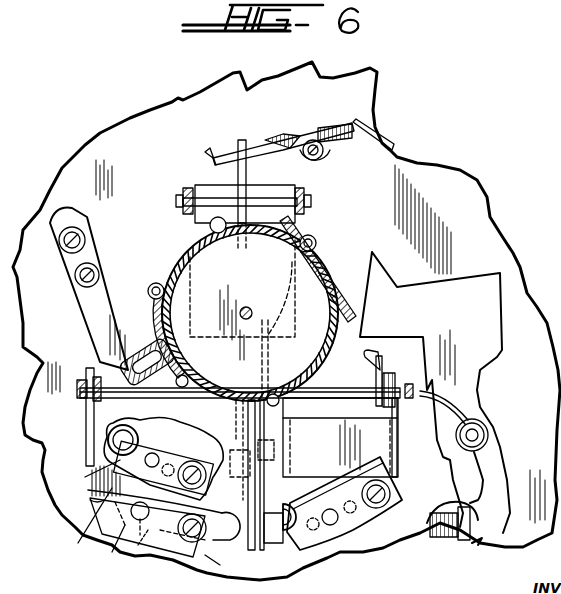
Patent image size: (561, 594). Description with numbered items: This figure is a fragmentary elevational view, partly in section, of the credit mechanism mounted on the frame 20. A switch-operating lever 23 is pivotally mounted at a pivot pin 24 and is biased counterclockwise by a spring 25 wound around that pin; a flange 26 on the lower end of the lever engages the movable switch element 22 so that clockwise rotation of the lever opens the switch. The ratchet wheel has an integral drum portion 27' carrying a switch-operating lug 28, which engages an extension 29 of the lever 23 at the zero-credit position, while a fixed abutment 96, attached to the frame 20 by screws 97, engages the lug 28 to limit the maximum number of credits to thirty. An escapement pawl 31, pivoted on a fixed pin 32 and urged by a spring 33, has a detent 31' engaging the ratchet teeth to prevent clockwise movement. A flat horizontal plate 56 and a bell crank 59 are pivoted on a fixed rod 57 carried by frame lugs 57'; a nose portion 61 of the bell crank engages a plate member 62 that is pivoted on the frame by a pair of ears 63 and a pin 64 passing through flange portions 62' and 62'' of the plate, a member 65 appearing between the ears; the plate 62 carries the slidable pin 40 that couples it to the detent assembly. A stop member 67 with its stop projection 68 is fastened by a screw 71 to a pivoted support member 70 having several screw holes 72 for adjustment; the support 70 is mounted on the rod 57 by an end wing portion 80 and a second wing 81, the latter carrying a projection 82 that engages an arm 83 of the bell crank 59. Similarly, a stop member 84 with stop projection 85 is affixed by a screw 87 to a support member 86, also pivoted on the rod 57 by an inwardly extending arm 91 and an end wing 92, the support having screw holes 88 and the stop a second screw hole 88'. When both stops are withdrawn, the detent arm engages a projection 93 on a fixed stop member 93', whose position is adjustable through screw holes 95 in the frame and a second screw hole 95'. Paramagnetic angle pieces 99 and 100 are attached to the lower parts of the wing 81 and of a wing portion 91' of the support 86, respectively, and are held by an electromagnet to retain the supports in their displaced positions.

The frame 20 is at (140, 158).
The switch element 22 is at (433, 513).
The switch-operating lever 23 is at (474, 311).
The pivot pin 24 is at (485, 432).
The spring 25 is at (485, 470).
The flange 26 is at (478, 548).
The drum portion 27' is at (319, 269).
The switch-operating lug 28 is at (140, 352).
The extension 29 is at (366, 354).
The pawl 31 is at (283, 132).
The detent 31' is at (219, 132).
The fixed pin 32 is at (314, 145).
The spring 33 is at (284, 136).
The slidable pin 40 is at (246, 307).
The flat horizontal plate 56 is at (376, 375).
The fixed rod 57 is at (240, 401).
The frame lugs 57' is at (241, 373).
The bell crank 59 is at (292, 350).
The nose portion 61 is at (280, 298).
The plate member 62 is at (250, 315).
The flange portion 62' is at (191, 243).
The flange portion 62'' is at (287, 238).
The ears 63 is at (185, 190).
The pin 64 is at (208, 200).
The center post 65 is at (247, 174).
The stop member 67 is at (332, 526).
The stop projection 68 is at (296, 536).
The support member 70 is at (328, 460).
The screw 71 is at (372, 506).
The screw holes 72 is at (316, 517).
The end wing portion 80 is at (386, 414).
The wing 81 is at (292, 420).
The projection 82 is at (250, 450).
The arm 83 is at (278, 450).
The stop member 84 is at (140, 553).
The stop projection 85 is at (210, 560).
The support member 86 is at (82, 520).
The screw 87 is at (185, 550).
The screw holes 88 is at (107, 546).
The second screw hole 88' is at (136, 546).
The inwardly extending arm 91 is at (156, 514).
The wing portion 91' is at (230, 513).
The end wing 92 is at (86, 404).
The projection 93 is at (91, 476).
The fixed stop member 93' is at (85, 506).
The screw holes 95 is at (157, 458).
The second screw hole 95' is at (189, 461).
The fixed abutment 96 is at (90, 335).
The screws 97 is at (93, 275).
The angle piece 99 is at (276, 544).
The angle piece 100 is at (250, 549).